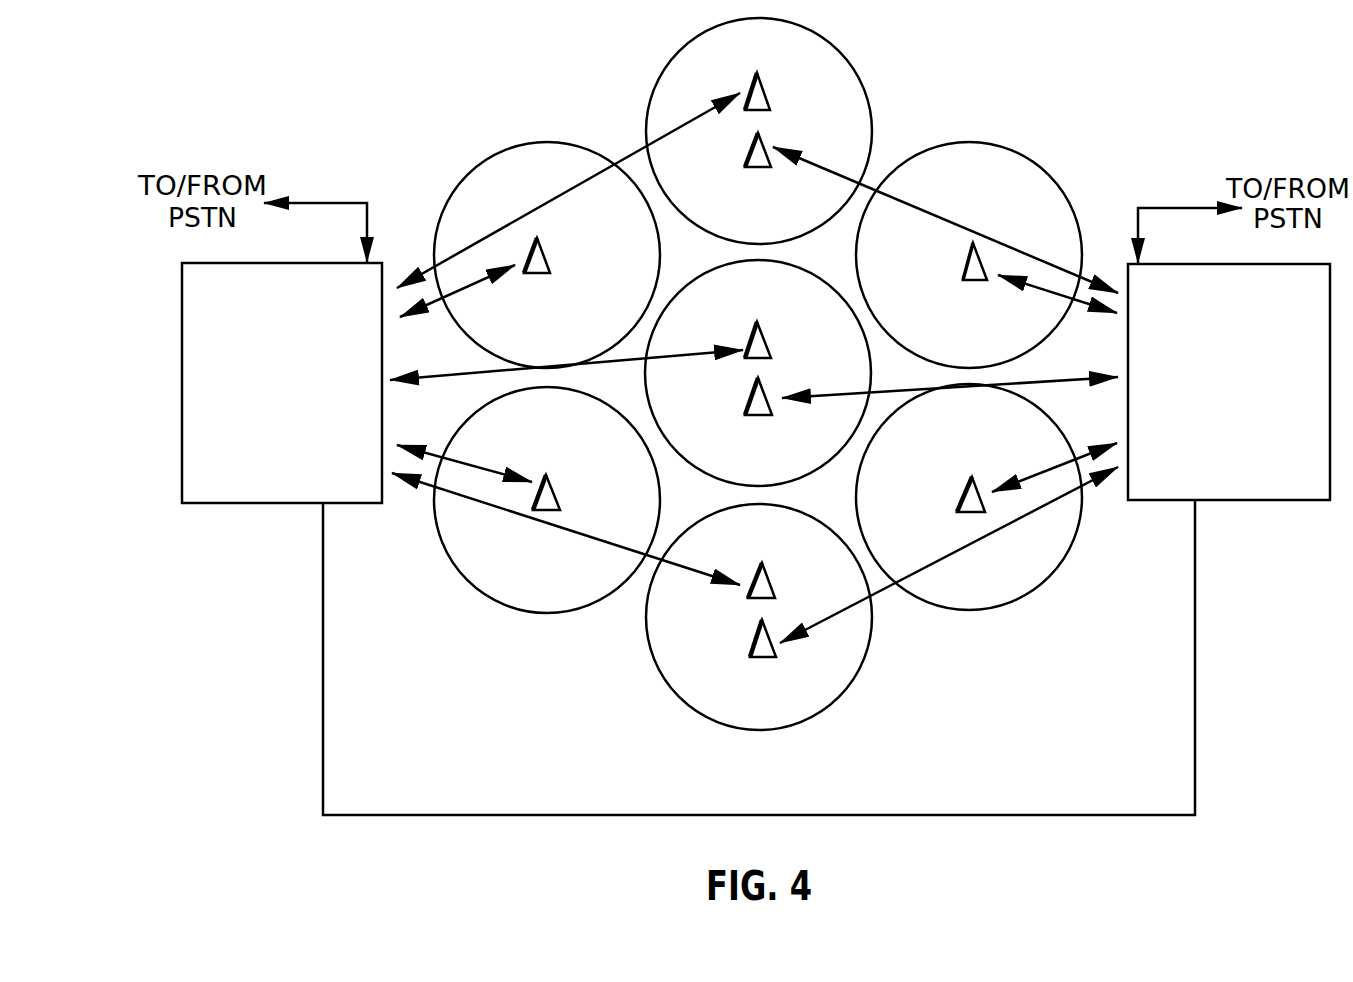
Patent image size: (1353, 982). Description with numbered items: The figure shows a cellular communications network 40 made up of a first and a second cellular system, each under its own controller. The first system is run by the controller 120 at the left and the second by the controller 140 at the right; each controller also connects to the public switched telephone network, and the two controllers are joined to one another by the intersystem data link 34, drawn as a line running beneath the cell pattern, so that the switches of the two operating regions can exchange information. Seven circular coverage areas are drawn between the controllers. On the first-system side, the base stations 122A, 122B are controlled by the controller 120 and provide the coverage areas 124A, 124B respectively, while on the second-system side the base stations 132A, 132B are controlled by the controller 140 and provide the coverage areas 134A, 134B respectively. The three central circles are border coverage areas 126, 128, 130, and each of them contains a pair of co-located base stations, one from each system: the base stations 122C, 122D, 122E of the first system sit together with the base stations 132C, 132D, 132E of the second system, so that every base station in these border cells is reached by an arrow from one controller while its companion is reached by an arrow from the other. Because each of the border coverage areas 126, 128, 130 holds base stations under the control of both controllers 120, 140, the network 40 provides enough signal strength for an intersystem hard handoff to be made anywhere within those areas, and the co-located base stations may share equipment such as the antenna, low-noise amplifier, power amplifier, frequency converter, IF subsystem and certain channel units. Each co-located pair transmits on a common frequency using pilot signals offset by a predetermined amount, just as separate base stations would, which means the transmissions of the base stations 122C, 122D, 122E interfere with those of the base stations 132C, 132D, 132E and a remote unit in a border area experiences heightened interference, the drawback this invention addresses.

The cellular communications network 40 is at (1302, 74).
The intersystem data link 34 is at (1196, 652).
The controller 120 is at (254, 504).
The controller 140 is at (1232, 500).
The border coverage area 126 is at (806, 237).
The border coverage area 128 is at (810, 477).
The border coverage area 130 is at (806, 719).
The coverage area 124A is at (622, 346).
The coverage area 124B is at (601, 597).
The coverage area 134A is at (1020, 353).
The coverage area 134B is at (1020, 597).
The base station 122A is at (552, 268).
The base station 122B is at (561, 500).
The base station 122C is at (755, 632).
The base station 122D is at (750, 390).
The base station 122E is at (750, 142).
The base station 132A is at (960, 275).
The base station 132B is at (958, 505).
The base station 132C is at (770, 573).
The base station 132D is at (767, 330).
The base station 132E is at (764, 88).